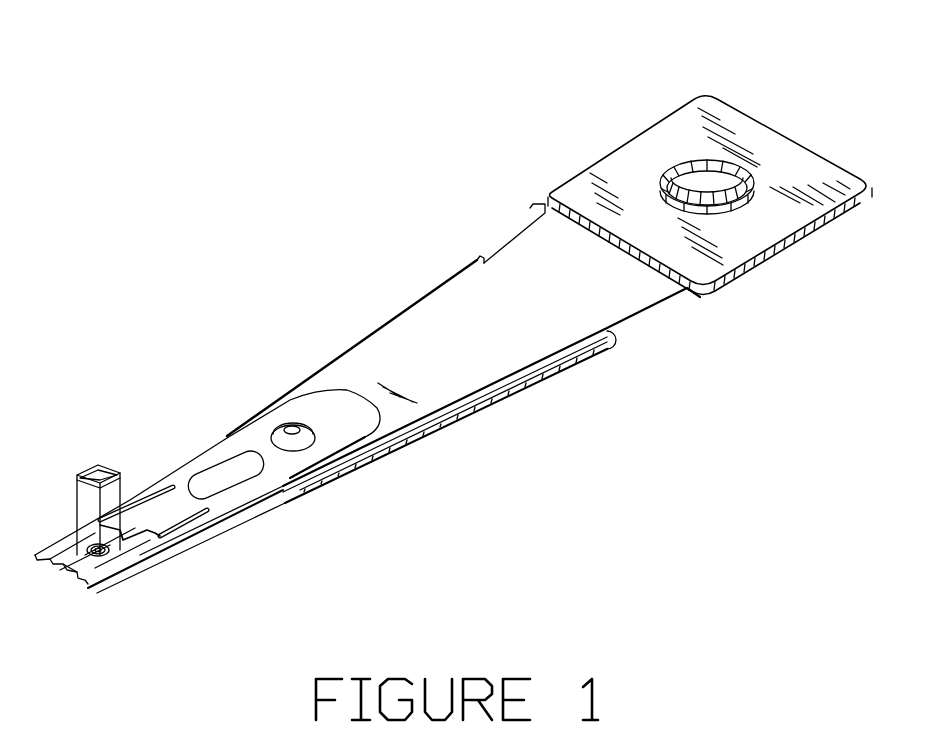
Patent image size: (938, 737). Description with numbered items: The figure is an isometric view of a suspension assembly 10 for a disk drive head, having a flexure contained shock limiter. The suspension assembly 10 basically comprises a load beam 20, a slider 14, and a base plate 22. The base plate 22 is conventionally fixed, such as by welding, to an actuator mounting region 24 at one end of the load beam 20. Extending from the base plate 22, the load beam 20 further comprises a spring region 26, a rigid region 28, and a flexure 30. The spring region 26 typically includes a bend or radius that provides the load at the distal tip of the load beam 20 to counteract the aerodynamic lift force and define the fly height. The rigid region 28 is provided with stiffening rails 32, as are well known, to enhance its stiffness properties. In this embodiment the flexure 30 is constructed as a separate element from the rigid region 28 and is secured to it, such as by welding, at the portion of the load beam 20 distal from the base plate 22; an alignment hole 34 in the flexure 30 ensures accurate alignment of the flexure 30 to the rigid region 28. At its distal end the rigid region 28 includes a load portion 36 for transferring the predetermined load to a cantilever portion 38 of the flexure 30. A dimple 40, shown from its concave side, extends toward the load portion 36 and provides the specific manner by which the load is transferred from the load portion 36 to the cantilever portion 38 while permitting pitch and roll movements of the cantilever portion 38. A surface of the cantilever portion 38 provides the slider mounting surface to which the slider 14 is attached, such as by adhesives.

The suspension assembly 10 is at (453, 359).
The slider 14 is at (100, 472).
The load beam 20 is at (440, 372).
The base plate 22 is at (683, 128).
The actuator mounting region 24 is at (700, 298).
The spring region 26 is at (546, 238).
The rigid region 28 is at (463, 380).
The flexure 30 is at (207, 499).
The stiffening rails 32 is at (395, 443).
The alignment hole 34 is at (287, 428).
The load portion 36 is at (102, 587).
The cantilever portion 38 is at (76, 573).
The dimple 40 is at (121, 559).